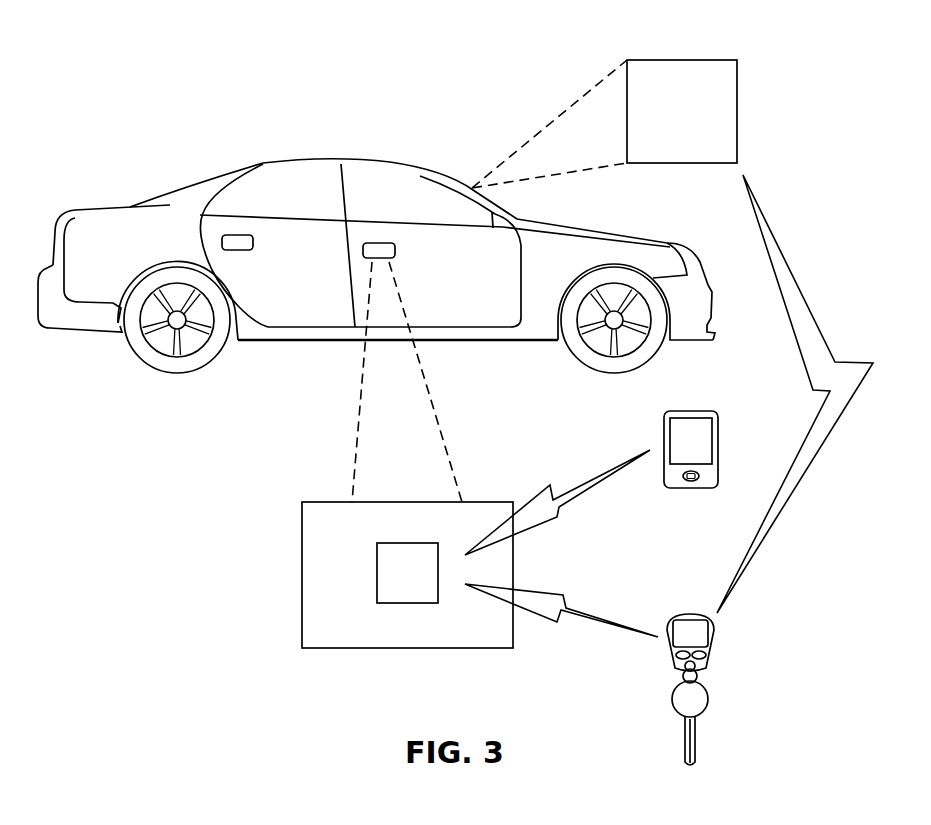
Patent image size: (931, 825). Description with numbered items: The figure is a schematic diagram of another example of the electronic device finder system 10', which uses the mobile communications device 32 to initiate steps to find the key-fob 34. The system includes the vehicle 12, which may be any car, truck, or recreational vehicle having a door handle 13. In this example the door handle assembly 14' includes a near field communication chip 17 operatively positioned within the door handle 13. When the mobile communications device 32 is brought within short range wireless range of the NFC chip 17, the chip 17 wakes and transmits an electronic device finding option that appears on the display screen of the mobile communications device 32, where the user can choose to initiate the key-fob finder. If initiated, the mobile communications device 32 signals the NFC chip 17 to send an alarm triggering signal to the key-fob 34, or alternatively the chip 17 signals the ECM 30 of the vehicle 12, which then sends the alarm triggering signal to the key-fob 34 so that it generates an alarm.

The electronic device finder system 10' is at (455, 383).
The vehicle 12 is at (335, 162).
The door handle 13 is at (378, 243).
The door handle assembly 14' is at (355, 575).
The near field communication (NFC) chip 17 is at (407, 573).
The ECM 30 is at (682, 111).
The mobile communications device 32 is at (720, 448).
The key-fob 34 is at (689, 613).